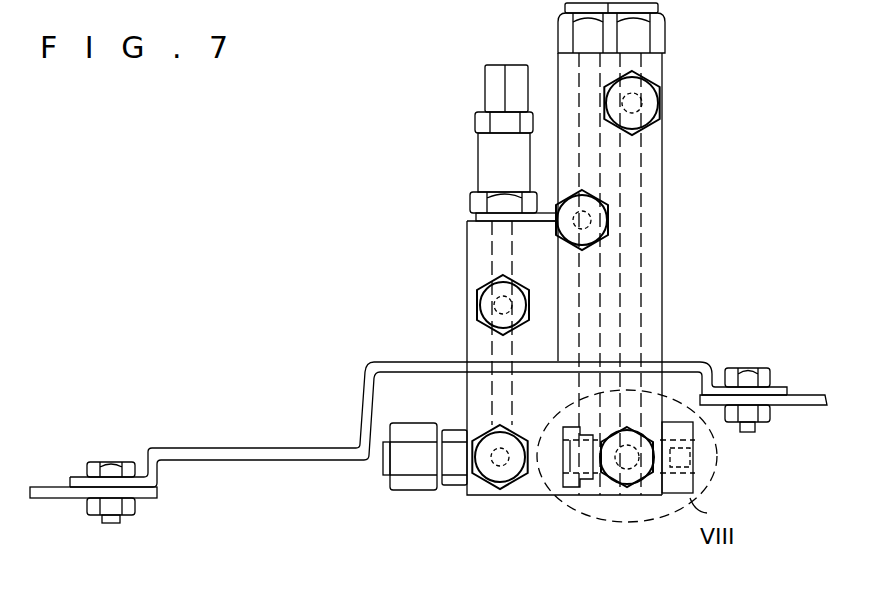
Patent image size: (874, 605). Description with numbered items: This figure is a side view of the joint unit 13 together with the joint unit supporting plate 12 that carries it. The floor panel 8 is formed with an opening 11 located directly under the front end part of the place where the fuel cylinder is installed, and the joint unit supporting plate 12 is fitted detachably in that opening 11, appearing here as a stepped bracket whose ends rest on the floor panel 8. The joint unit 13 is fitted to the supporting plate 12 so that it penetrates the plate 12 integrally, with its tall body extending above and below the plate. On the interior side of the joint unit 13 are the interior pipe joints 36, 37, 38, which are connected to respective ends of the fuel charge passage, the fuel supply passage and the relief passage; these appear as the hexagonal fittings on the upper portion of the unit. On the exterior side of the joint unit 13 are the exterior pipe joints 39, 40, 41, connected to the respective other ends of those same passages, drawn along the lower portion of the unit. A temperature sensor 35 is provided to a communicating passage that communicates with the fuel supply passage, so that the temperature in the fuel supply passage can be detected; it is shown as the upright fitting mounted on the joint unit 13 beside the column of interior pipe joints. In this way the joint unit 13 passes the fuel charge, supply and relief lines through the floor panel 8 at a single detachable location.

The floor panel 8 is at (43, 487).
The opening 11 is at (157, 492).
The joint unit supporting plate 12 is at (370, 362).
The joint unit 13 is at (677, 65).
The temperature sensor 35 is at (498, 157).
The interior pipe joint 36 is at (650, 100).
The interior pipe joint 37 is at (483, 292).
The interior pipe joint 38 is at (607, 220).
The exterior pipe joint 39 is at (603, 478).
The exterior pipe joint 40 is at (500, 473).
The exterior pipe joint 41 is at (420, 482).